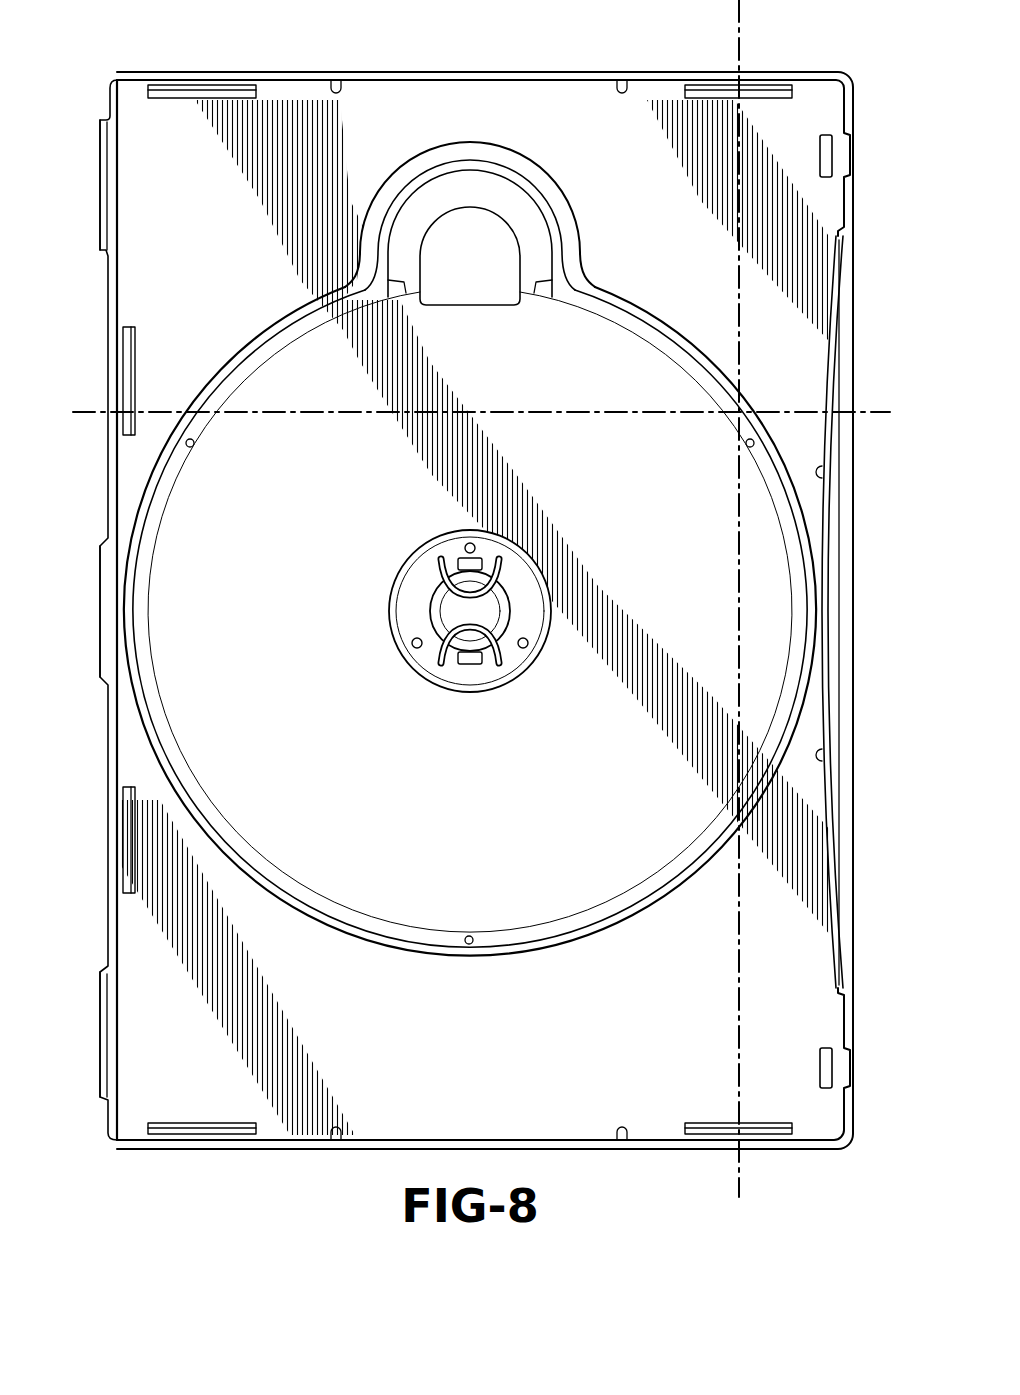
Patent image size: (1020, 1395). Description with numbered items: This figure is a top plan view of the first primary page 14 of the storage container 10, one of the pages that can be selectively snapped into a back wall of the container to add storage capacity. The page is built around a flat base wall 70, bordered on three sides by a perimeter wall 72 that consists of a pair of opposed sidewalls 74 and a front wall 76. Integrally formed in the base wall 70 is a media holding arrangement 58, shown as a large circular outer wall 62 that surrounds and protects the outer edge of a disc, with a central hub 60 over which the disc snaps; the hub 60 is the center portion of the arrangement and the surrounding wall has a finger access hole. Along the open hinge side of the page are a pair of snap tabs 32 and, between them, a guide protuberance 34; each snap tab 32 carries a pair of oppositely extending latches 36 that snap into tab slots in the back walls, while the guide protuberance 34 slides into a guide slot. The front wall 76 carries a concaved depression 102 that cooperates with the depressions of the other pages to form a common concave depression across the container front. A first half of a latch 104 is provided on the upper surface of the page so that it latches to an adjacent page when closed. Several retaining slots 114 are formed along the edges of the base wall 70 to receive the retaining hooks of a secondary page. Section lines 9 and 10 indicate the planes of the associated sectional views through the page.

The section line 9- 9 is at (73, 412).
The storage container 10 is at (739, 4).
The first primary page 14 is at (592, 70).
The snap tab 32 is at (103, 117).
The guide protuberance 34 is at (102, 617).
The latch 36 is at (102, 182).
The media holding arrangement 58 is at (560, 950).
The hub 60 is at (443, 612).
The outer wall 62 is at (178, 762).
The base wall 70 is at (535, 122).
The perimeter wall 72 is at (286, 1152).
The sidewall 74 is at (448, 70).
The front wall 76 is at (855, 1022).
The concaved depression 102 is at (828, 630).
The first half of a latch 104 is at (848, 155).
The retaining slot 114 is at (205, 92).